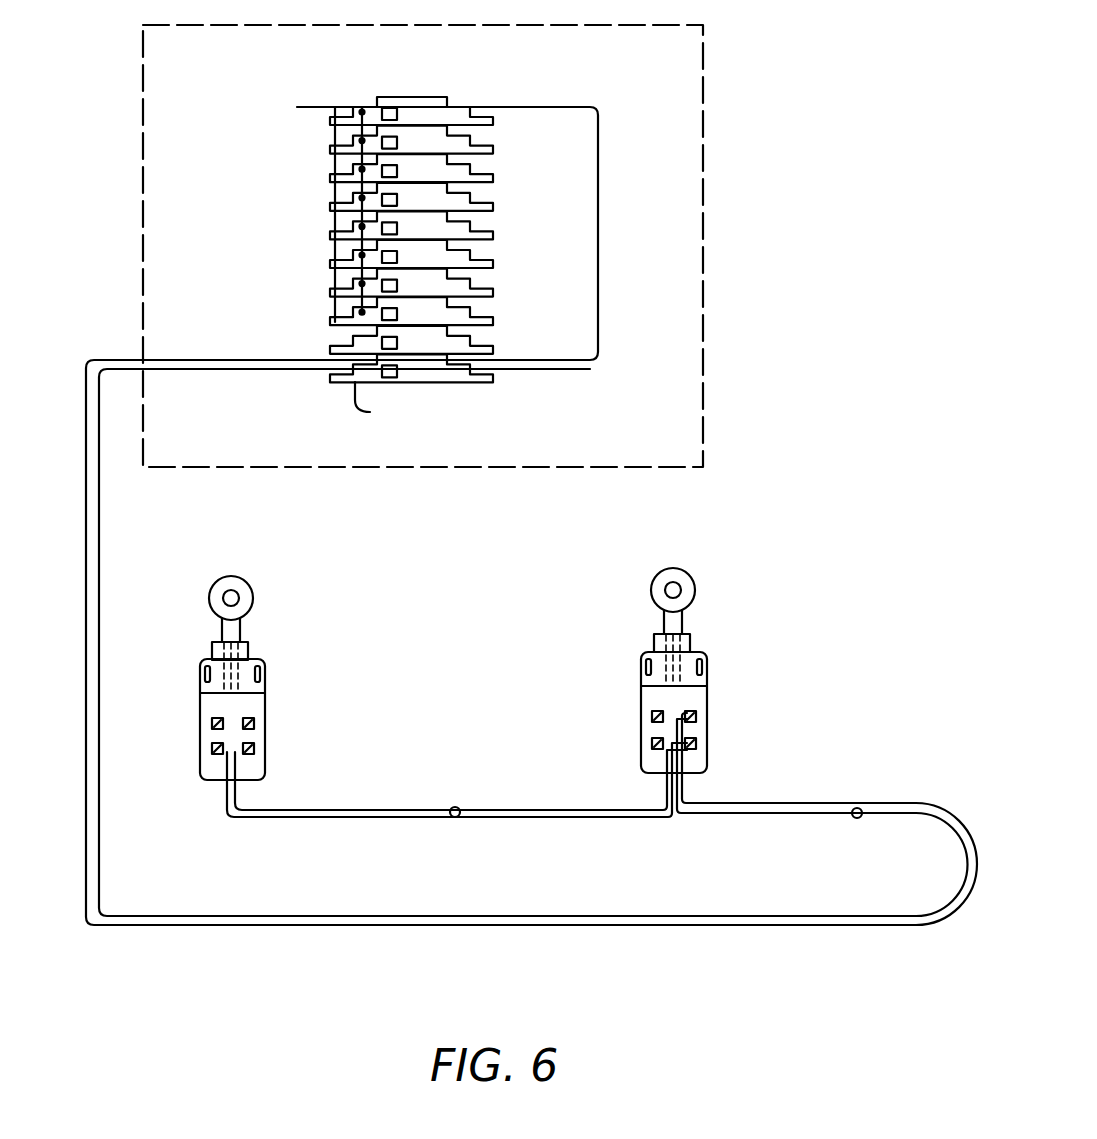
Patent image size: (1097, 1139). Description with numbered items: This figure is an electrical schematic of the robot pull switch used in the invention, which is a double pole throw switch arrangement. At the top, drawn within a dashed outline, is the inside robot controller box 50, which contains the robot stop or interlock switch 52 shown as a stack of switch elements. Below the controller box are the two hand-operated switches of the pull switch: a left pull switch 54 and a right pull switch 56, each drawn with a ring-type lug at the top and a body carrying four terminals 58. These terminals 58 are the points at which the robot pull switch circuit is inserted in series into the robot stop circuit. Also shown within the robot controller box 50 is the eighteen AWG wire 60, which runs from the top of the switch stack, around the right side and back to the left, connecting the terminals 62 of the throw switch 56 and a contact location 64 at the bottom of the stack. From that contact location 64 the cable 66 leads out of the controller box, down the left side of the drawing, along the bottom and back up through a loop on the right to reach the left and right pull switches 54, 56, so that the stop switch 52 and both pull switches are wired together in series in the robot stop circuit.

The inside robot controller box 50 is at (690, 233).
The robot stop or interlock switch 52 is at (314, 255).
The left pull switch 54 is at (265, 693).
The right pull switch 56 is at (641, 686).
The terminals 58 is at (212, 750).
The 18 AWG wire 60 is at (600, 333).
The terminals of throw switch 62 is at (493, 382).
The contact location 64 is at (387, 409).
The cable 66 is at (458, 806).